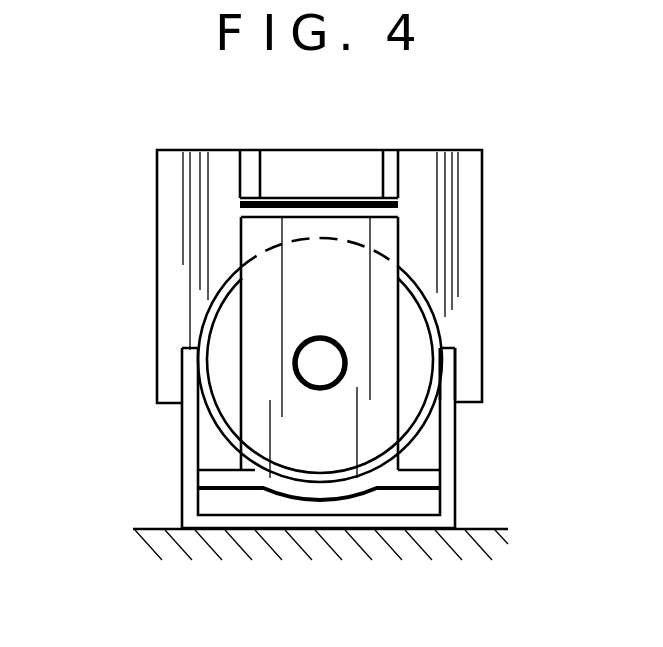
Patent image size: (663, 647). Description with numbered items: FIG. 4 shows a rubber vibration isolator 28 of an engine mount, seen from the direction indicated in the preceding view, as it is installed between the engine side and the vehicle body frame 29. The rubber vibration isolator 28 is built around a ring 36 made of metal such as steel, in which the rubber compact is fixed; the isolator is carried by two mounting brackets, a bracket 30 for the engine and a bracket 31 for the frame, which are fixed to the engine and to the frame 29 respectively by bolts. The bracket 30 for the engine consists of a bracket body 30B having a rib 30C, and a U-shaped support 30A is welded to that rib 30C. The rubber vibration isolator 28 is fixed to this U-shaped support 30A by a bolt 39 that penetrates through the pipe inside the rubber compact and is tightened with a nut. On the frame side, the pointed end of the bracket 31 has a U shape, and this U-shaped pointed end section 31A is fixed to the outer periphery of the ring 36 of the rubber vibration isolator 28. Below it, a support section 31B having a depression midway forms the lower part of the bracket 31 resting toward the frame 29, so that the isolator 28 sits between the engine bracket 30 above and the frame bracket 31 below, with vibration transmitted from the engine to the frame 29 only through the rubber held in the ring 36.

The rubber vibration isolator 28 is at (425, 430).
The body frame 29 is at (380, 536).
The bracket for the engine 30 is at (485, 177).
The U-shaped support 30A is at (402, 243).
The bracket body 30B is at (327, 150).
The rib 30C is at (250, 158).
The bracket for the frame 31 is at (460, 498).
The U-shaped pointed end section 31A is at (456, 383).
The support section 31B is at (282, 497).
The ring 36 is at (210, 302).
The bolt 39 is at (335, 356).